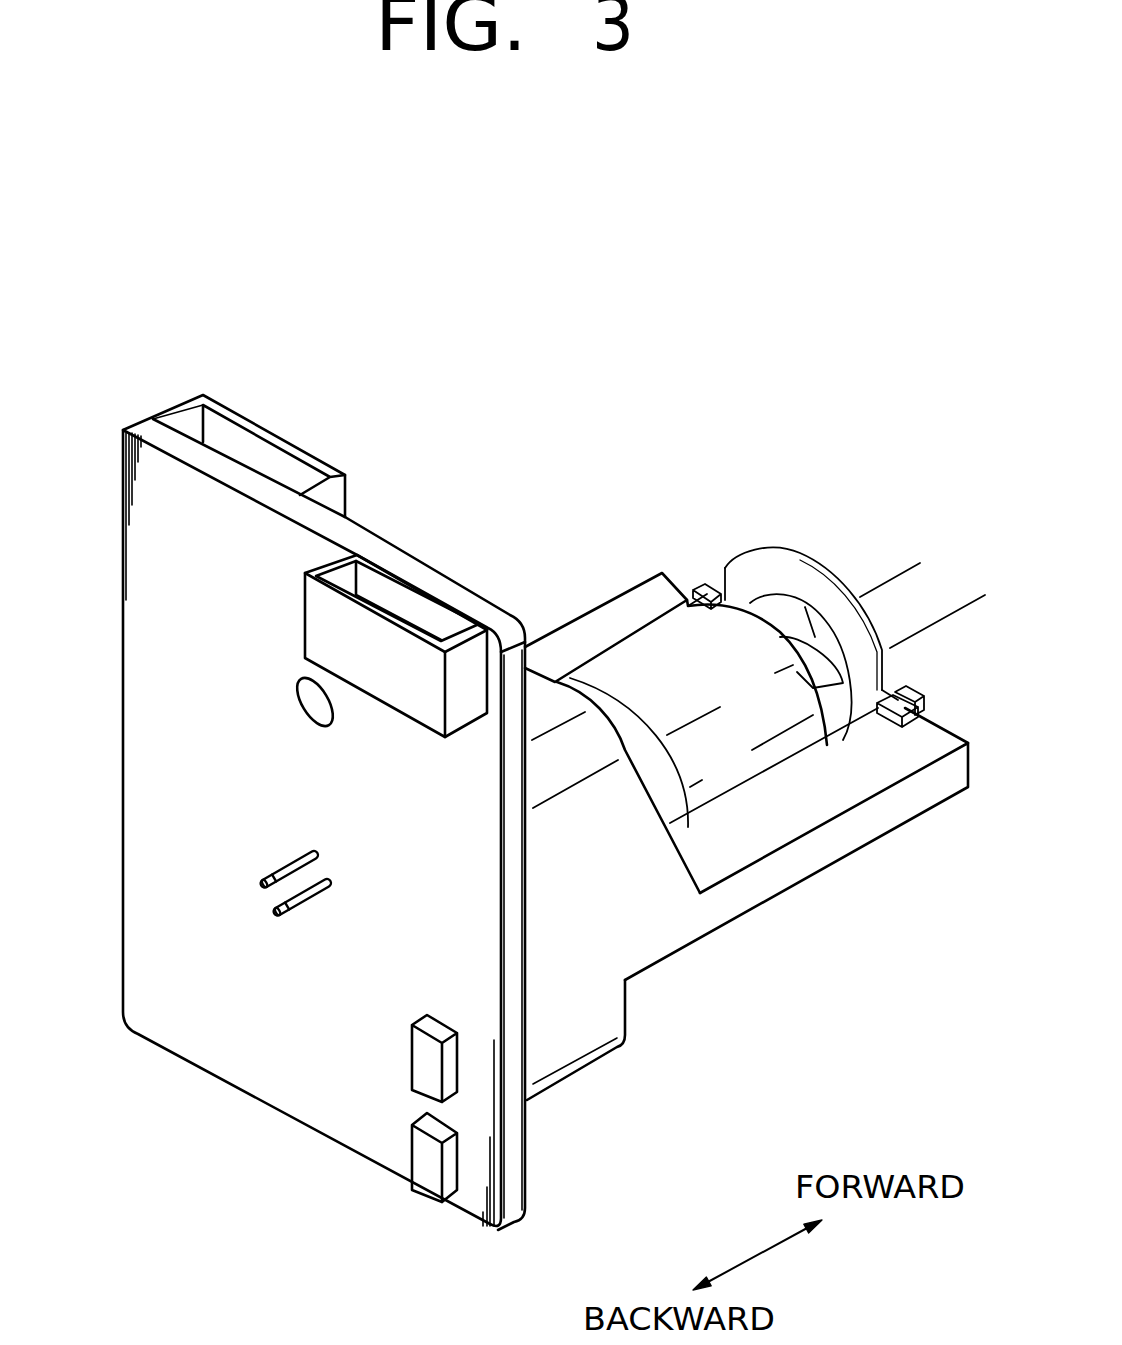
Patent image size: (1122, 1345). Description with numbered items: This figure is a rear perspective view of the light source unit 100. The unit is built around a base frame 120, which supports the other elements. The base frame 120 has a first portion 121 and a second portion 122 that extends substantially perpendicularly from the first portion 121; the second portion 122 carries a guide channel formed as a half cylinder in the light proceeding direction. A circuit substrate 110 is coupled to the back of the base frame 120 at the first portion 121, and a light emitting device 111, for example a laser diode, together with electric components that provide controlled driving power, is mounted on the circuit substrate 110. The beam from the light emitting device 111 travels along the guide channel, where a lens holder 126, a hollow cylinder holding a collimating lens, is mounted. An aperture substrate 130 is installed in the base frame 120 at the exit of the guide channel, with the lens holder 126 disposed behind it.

The light source unit 100 is at (522, 457).
The circuit substrate 110 is at (157, 432).
The light emitting device 111 is at (300, 902).
The base frame 120 is at (757, 1090).
The first portion 121 is at (595, 1020).
The second portion 122 is at (697, 913).
The lens holder 126 is at (737, 757).
The aperture substrate 130 is at (870, 673).